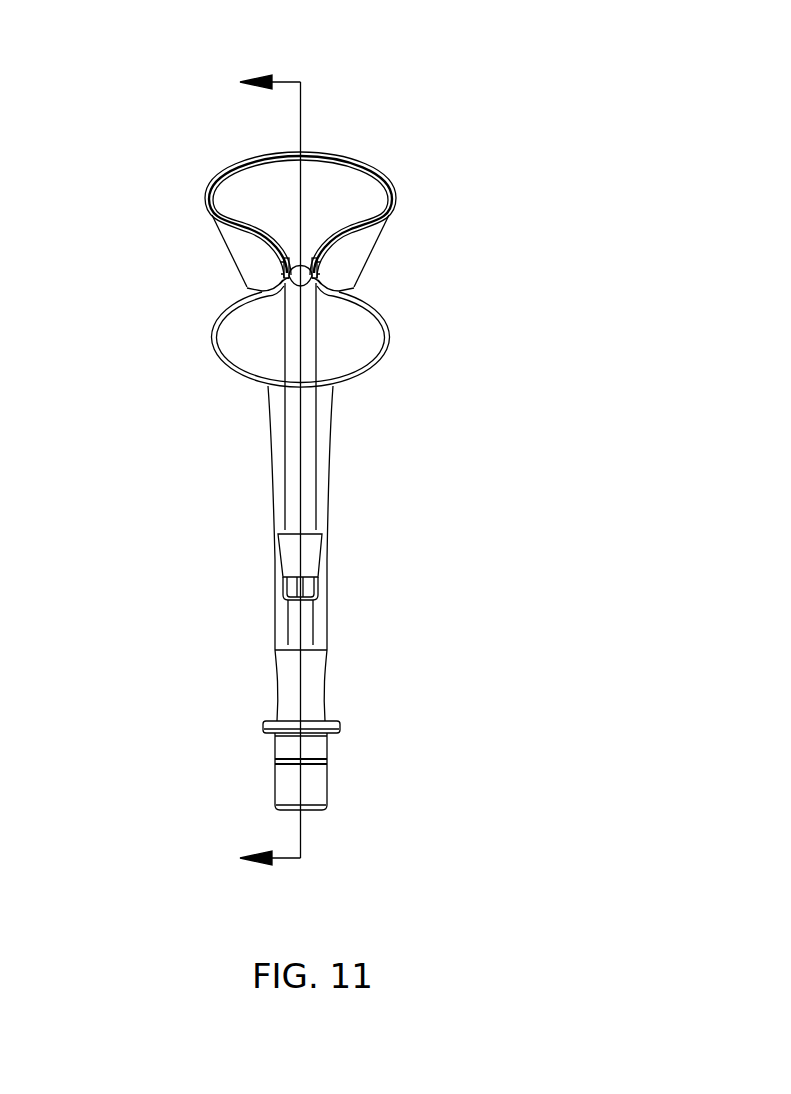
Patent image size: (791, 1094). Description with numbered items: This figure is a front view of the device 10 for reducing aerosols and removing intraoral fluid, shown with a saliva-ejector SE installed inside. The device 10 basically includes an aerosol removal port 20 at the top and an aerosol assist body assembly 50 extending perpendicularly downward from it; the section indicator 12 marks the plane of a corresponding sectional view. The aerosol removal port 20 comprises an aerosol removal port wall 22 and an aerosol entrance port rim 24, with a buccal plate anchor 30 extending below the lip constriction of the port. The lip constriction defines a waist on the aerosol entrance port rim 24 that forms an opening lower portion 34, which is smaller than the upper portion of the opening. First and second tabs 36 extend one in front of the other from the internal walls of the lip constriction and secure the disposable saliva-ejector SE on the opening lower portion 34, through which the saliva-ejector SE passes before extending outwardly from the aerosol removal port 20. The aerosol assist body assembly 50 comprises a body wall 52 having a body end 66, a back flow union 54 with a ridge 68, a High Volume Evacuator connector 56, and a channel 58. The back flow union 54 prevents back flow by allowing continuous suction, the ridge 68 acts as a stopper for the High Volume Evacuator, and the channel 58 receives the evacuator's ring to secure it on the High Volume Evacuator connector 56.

The device for reducing aerosols and removing intraoral fluid 10 is at (93, 167).
The section line 12- 12 is at (289, 463).
The aerosol removal port 20 is at (363, 213).
The aerosol removal port wall 22 is at (365, 266).
The aerosol entrance port rim 24 is at (365, 175).
The buccal plate anchor 30 is at (231, 374).
The opening lower portion 34 is at (283, 309).
The first and second tabs 36 is at (284, 266).
The saliva-ejector SE is at (310, 424).
The aerosol assist body assembly 50 is at (364, 558).
The body wall 52 is at (323, 606).
The back flow union 54 is at (328, 668).
The High Volume Evacuator connector 56 is at (321, 783).
The channel 58 is at (328, 760).
The body end 66 is at (288, 646).
The ridge 68 is at (340, 723).